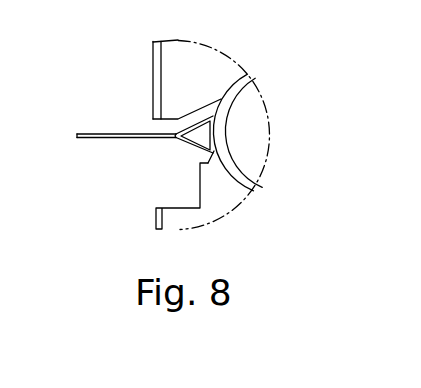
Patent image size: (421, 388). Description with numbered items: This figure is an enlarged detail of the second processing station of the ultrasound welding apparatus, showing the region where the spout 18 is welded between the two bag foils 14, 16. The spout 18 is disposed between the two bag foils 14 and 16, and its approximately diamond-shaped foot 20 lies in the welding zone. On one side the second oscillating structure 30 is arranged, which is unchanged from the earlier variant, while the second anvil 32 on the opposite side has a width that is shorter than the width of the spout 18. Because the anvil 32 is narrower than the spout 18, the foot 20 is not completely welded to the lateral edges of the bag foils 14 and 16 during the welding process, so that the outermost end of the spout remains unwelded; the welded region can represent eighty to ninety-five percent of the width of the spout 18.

The bag foil 14 is at (83, 132).
The bag foil 16 is at (170, 140).
The spout 18 is at (233, 124).
The foot 20 is at (209, 136).
The second oscillating structure 30 is at (168, 72).
The second anvil 32 is at (212, 198).